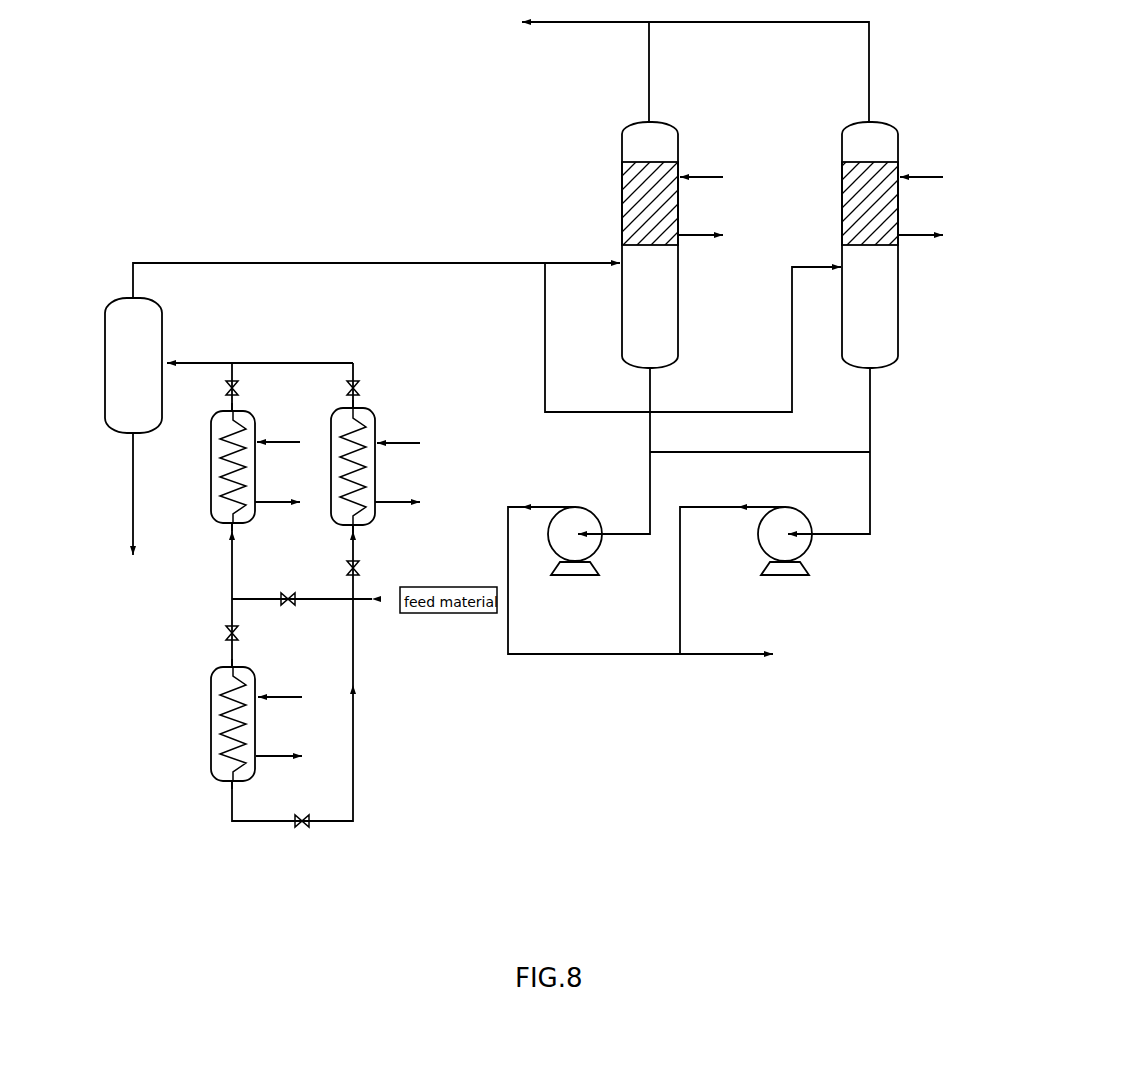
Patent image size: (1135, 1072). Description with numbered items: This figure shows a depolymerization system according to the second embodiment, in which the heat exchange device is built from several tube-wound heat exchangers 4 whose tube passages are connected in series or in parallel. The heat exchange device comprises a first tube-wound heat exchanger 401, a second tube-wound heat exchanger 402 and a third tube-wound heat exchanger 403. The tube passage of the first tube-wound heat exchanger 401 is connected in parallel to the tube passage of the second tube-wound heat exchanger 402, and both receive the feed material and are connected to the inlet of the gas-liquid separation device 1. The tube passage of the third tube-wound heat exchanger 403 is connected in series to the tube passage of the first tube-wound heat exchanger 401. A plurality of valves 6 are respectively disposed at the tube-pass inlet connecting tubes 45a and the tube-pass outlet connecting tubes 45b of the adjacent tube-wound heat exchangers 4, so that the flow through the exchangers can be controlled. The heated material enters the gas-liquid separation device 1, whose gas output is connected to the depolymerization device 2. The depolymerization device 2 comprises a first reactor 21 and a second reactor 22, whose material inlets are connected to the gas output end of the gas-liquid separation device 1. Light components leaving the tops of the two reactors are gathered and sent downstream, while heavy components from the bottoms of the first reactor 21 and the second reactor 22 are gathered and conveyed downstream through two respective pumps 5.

The gas-liquid separation device 1 is at (125, 403).
The depolymerization device 2 is at (705, 236).
The first reactor 21 is at (637, 148).
The second reactor 22 is at (858, 143).
The tube-wound heat exchanger 4 is at (292, 613).
The first tube-wound heat exchanger 401 is at (212, 512).
The second tube-wound heat exchanger 402 is at (373, 415).
The third tube-wound heat exchanger 403 is at (210, 705).
The tube-pass inlet connecting tube 45a is at (230, 528).
The tube-pass outlet connecting tube 45b is at (226, 410).
The pump 5 is at (588, 545).
The valve 6 is at (347, 388).